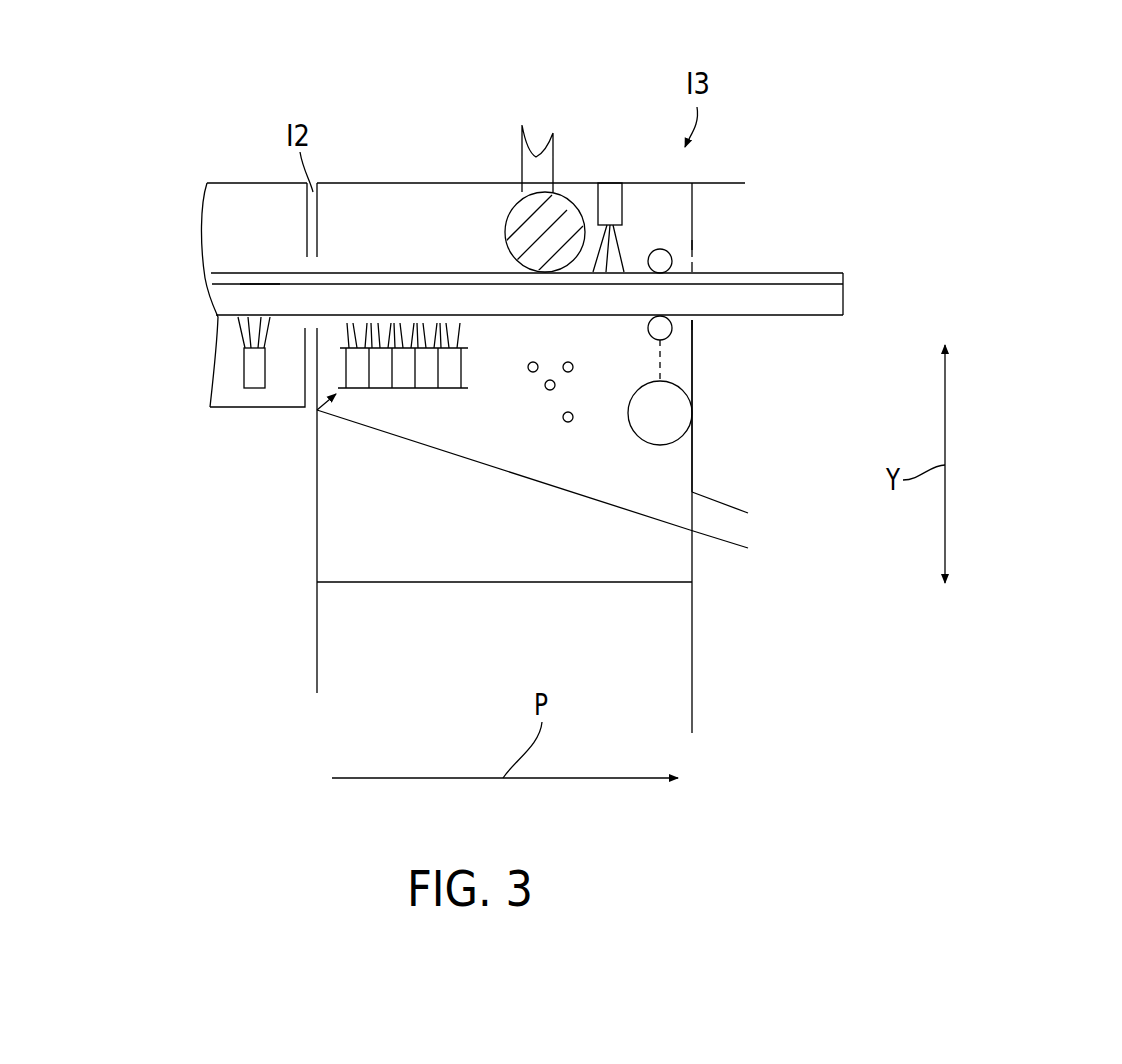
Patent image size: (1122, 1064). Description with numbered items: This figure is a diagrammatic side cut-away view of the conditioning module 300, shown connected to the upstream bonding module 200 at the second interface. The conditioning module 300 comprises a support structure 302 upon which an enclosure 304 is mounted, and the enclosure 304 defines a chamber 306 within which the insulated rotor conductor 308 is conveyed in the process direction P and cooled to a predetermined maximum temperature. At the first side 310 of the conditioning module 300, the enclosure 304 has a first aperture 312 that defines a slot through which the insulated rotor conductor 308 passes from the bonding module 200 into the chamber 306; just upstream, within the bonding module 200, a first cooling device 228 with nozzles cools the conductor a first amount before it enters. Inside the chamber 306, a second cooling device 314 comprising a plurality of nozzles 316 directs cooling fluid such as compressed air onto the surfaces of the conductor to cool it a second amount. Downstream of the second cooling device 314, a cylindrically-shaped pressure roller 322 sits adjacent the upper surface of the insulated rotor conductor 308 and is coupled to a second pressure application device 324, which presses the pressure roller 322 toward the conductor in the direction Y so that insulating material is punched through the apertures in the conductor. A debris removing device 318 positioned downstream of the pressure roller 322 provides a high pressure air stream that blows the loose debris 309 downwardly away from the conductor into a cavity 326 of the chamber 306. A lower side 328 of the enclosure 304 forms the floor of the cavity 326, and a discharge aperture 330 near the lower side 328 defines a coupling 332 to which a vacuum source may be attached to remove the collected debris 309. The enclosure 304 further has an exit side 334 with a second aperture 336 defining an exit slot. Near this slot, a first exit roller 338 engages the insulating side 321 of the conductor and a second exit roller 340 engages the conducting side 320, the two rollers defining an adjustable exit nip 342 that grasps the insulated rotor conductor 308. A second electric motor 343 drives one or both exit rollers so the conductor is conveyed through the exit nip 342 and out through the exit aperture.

The bonding module 200 is at (150, 212).
The conditioning module 300 is at (837, 85).
The support structure 302 is at (317, 613).
The enclosure 304 is at (690, 182).
The chamber 306 is at (433, 202).
The insulated rotor conductor 308 is at (855, 299).
The debris 309 is at (568, 422).
The first side 310 is at (313, 385).
The first aperture 312 is at (313, 265).
The second cooling device 314 is at (314, 415).
The nozzles 316 is at (398, 393).
The debris removing device 318 is at (608, 203).
The conducting side 320 is at (218, 323).
The insulating side 321 is at (257, 282).
The pressure roller 322 is at (557, 210).
The second pressure application device 324 is at (537, 155).
The cavity 326 is at (642, 457).
The lower side 328 is at (628, 513).
The discharge aperture 330 is at (737, 527).
The coupling 332 is at (717, 538).
The exit side 334 is at (695, 245).
The second aperture 336 is at (692, 267).
The first exit roller 338 is at (670, 252).
The second exit roller 340 is at (670, 334).
The exit nip 342 is at (690, 322).
The second electric motor 343 is at (672, 405).
The first cooling device 228 is at (242, 362).